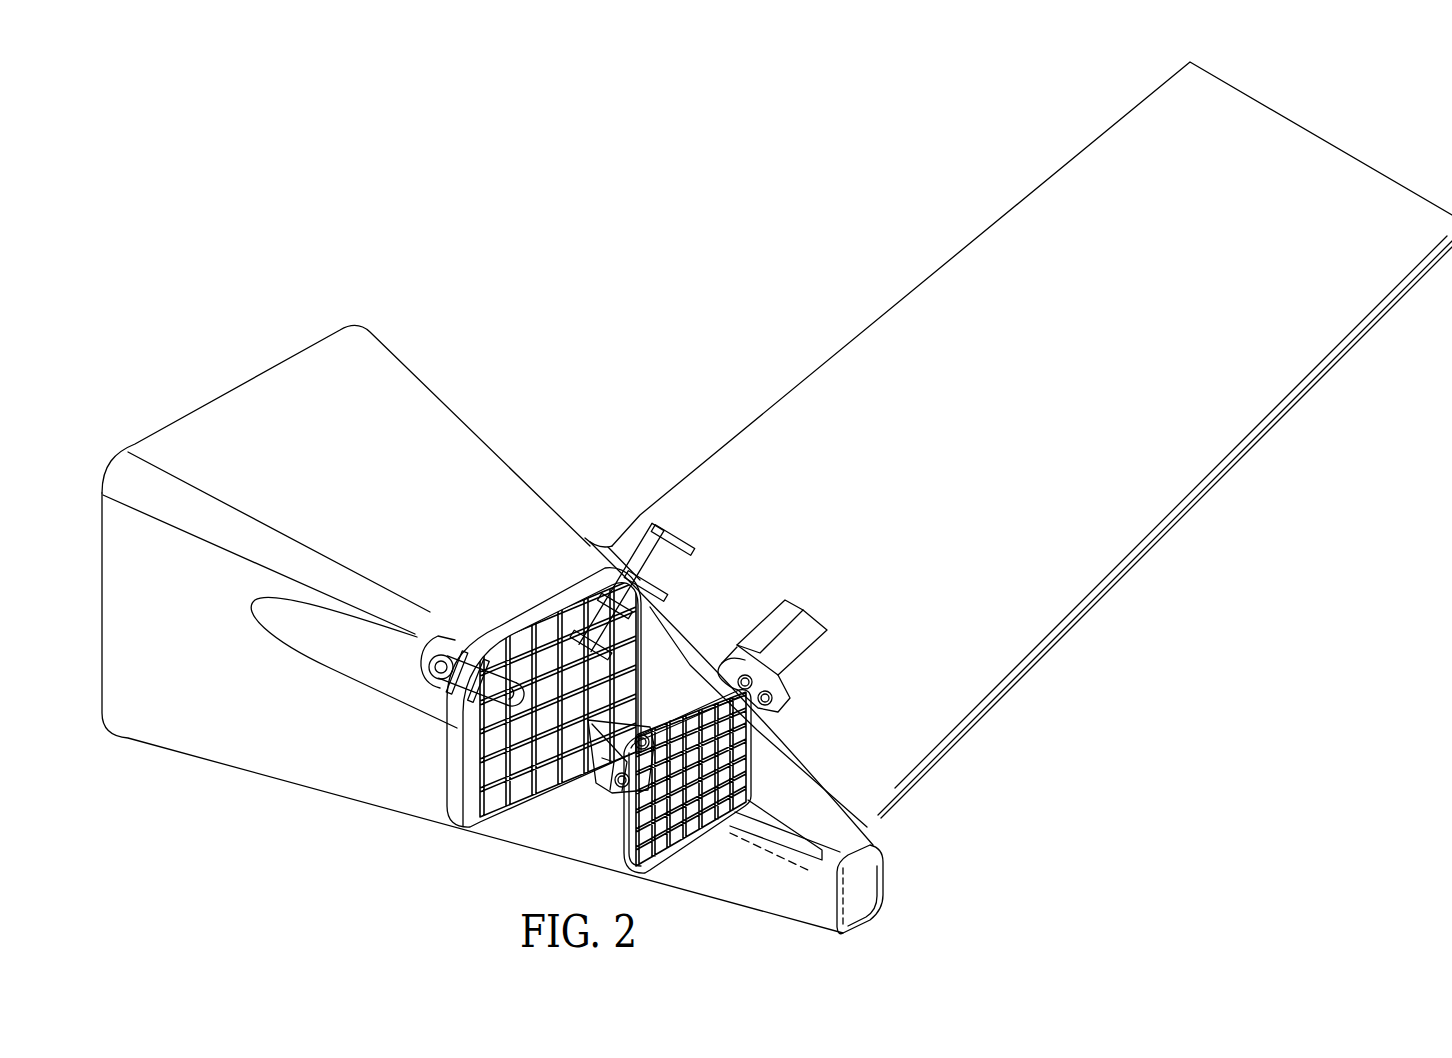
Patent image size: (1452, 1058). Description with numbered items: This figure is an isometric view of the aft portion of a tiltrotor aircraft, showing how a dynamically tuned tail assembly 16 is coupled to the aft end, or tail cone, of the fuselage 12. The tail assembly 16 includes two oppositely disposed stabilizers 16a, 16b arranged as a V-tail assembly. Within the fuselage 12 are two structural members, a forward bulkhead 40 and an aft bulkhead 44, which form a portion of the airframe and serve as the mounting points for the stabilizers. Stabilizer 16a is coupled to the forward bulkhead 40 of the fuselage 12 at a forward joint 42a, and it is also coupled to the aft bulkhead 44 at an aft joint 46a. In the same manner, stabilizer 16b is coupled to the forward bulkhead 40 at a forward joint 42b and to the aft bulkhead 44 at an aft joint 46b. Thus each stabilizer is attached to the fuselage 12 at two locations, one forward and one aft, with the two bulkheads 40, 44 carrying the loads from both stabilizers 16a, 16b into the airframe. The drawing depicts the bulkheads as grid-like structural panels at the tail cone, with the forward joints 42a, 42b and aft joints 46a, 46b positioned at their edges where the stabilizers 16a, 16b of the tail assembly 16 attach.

The fuselage 12 is at (245, 765).
The dynamically tuned tail assembly 16 is at (1222, 534).
The stabilizer 16a is at (347, 687).
The stabilizer 16b is at (1332, 363).
The forward bulkhead 40 is at (520, 618).
The forward joint 42a is at (420, 643).
The forward joint 42b is at (667, 570).
The aft bulkhead 44 is at (703, 840).
The aft joint 46a is at (603, 762).
The aft joint 46b is at (770, 684).